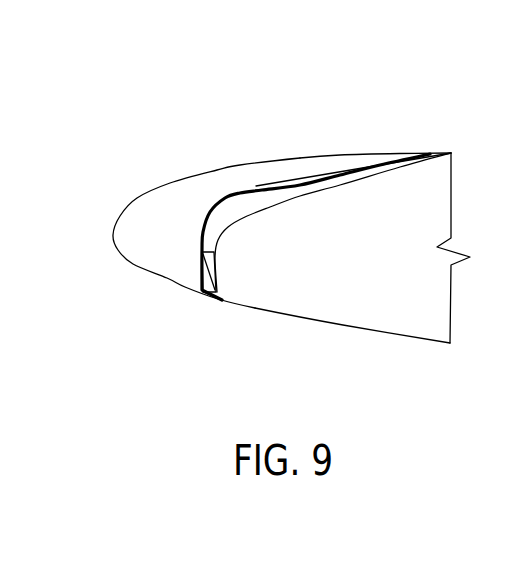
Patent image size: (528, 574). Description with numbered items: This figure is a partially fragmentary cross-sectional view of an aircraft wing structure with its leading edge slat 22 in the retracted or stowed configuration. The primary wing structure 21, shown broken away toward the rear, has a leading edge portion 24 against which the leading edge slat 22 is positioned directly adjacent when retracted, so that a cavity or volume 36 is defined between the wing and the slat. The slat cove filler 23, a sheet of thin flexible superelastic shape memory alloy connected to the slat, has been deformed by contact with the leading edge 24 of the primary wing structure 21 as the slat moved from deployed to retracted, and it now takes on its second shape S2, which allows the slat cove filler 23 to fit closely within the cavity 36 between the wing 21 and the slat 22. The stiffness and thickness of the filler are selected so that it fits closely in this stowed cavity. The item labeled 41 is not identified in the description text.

The primary wing structure 21 is at (342, 327).
The leading edge slat 22 is at (170, 181).
The slat cove filler 23 is at (261, 185).
The leading edge portion 24 is at (204, 256).
The cavity or volume 36 is at (225, 213).
The fastener 41 is at (218, 303).
The second shape S2 is at (312, 181).